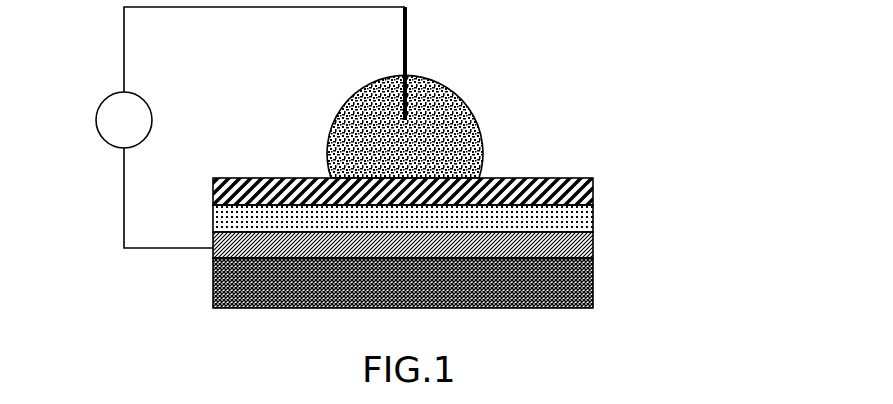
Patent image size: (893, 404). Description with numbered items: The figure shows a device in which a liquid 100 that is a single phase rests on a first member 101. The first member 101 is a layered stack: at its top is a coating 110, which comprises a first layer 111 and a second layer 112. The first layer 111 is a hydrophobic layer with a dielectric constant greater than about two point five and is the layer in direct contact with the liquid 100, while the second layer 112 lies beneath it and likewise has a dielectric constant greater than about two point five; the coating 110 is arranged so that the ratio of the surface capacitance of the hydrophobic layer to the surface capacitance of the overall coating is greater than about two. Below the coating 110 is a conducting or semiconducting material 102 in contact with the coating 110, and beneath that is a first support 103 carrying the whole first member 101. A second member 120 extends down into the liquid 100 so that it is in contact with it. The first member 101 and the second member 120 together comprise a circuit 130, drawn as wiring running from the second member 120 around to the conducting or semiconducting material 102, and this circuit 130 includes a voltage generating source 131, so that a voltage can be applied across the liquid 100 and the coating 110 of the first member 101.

The liquid 100 is at (460, 124).
The first member 101 is at (420, 248).
The conducting or semiconducting materials 102 is at (222, 250).
The first support 103 is at (223, 293).
The coating 110 is at (398, 203).
The first layer 111 is at (213, 189).
The second layer 112 is at (220, 215).
The second member 120 is at (407, 43).
The circuit 130 is at (123, 198).
The voltage generating source 131 is at (108, 108).